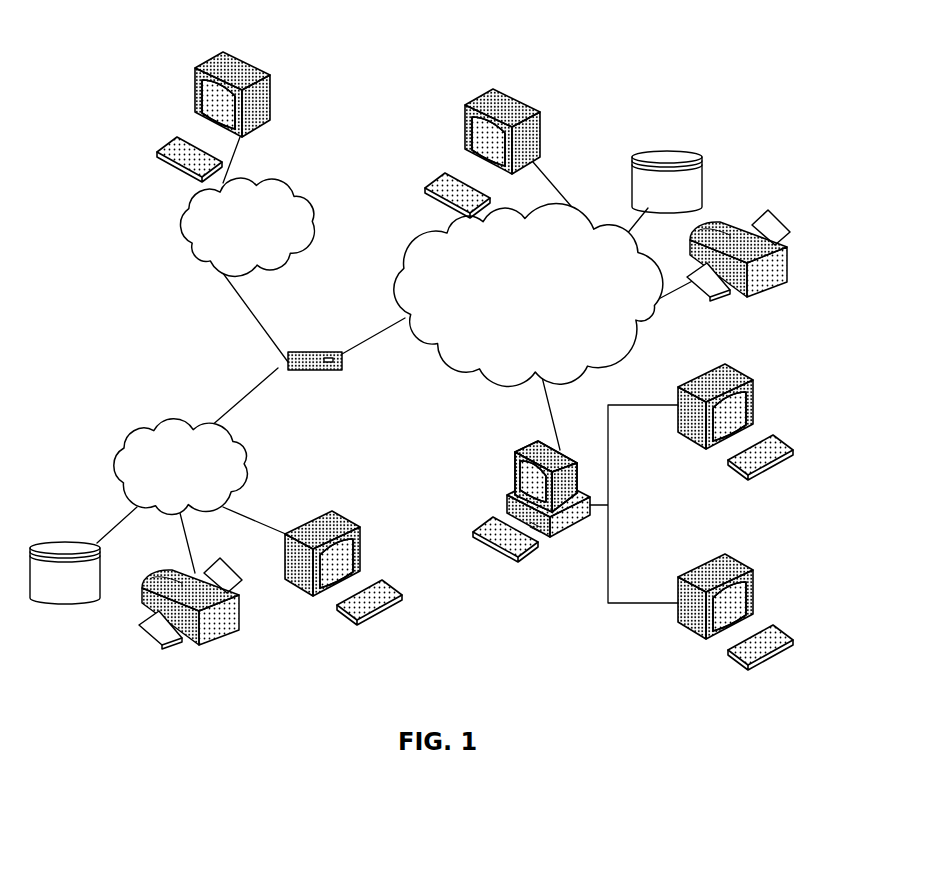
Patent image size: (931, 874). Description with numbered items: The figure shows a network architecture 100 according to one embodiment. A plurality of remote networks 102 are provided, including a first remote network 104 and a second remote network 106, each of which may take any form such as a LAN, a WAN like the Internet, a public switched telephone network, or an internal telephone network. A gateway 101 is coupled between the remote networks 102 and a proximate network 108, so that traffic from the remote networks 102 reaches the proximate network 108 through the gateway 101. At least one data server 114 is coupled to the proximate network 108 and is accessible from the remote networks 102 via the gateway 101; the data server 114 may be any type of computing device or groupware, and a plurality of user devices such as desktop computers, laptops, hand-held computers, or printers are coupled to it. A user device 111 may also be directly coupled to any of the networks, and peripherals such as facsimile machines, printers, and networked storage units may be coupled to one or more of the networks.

The network architecture 100 is at (131, 34).
The gateway 101 is at (301, 350).
The remote networks 102 is at (154, 286).
The first remote network 104 is at (115, 443).
The second remote network 106 is at (305, 201).
The proximate network 108 is at (620, 352).
The user device 111 is at (540, 112).
The data server 114 is at (518, 466).